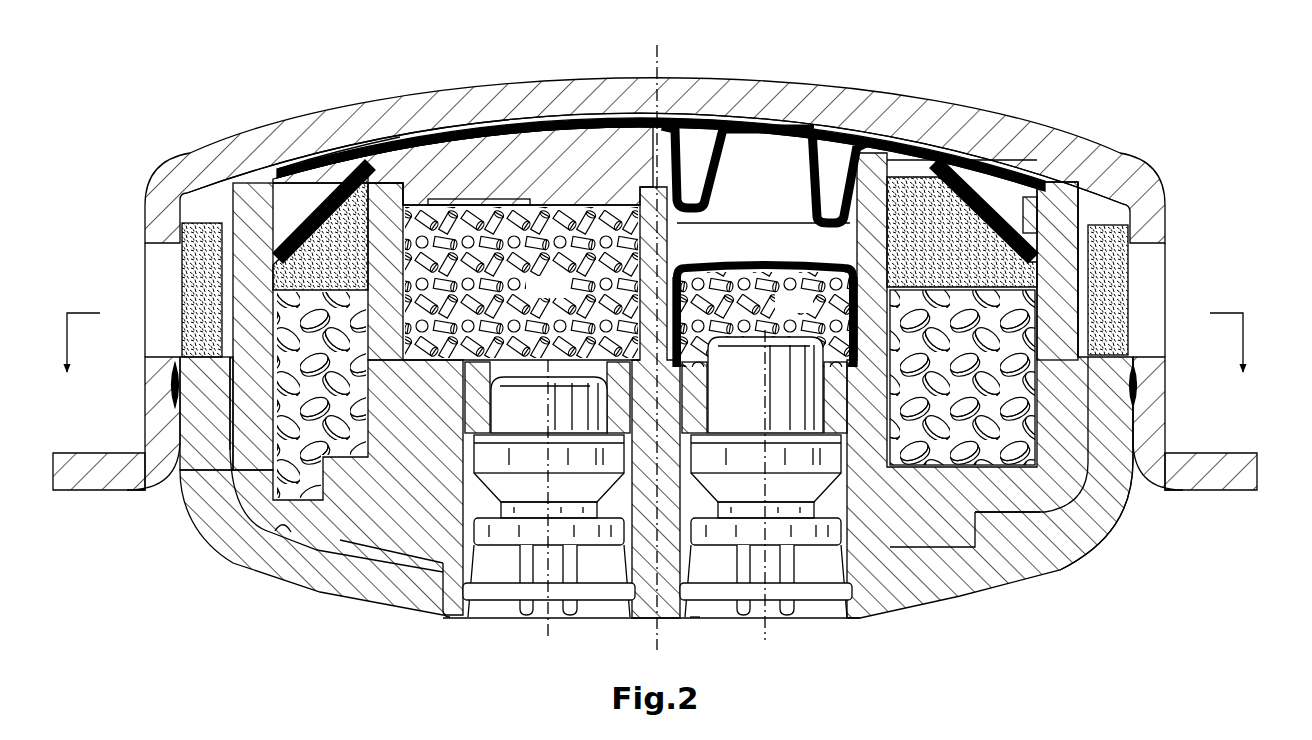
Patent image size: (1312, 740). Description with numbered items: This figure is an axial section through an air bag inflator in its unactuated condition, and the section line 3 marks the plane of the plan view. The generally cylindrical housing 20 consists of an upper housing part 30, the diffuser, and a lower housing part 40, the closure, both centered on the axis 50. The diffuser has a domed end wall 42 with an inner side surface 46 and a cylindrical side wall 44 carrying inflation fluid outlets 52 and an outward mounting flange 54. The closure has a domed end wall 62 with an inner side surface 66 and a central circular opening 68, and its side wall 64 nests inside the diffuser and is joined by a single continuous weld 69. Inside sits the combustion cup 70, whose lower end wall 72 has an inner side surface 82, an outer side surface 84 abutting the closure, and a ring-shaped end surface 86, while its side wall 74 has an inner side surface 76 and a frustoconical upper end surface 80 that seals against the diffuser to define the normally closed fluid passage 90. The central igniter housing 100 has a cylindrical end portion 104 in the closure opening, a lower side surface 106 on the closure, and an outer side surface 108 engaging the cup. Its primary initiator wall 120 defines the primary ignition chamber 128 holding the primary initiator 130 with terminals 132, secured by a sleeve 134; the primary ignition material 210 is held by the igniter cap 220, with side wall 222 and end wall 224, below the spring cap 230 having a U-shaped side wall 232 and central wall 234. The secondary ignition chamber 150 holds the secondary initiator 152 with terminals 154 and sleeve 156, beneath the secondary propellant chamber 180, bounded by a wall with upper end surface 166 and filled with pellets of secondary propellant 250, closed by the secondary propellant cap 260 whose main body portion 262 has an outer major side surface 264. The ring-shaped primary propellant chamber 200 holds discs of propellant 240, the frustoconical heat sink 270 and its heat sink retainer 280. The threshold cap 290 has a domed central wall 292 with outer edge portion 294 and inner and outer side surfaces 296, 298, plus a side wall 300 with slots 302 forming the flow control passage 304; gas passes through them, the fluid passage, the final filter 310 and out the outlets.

The housing 20 is at (654, 355).
The upper housing part 30 is at (655, 247).
The lower housing part 40 is at (658, 369).
The end wall 42 is at (520, 97).
The side wall 44 is at (163, 228).
The inner side surface 46 is at (560, 120).
The axis 50 is at (657, 47).
The inflation fluid outlets 52 is at (160, 292).
The inflator mounting flange 54 is at (78, 452).
The end wall 62 is at (280, 562).
The side wall 64 is at (195, 445).
The inner side surface 66 is at (270, 525).
The circular opening 68 is at (445, 603).
The weld 69 is at (170, 385).
The combustion cup 70 is at (1088, 490).
The lower end wall 72 is at (1022, 520).
The side wall 74 is at (1057, 280).
The inner side surface 76 is at (1040, 312).
The upper end surface 80 is at (1043, 227).
The inner side surface 82 is at (1077, 530).
The outer side surface 84 is at (1008, 528).
The end surface 86 is at (963, 545).
The fluid passage 90 is at (1162, 210).
The igniter housing 100 is at (901, 558).
The cylindrical end portion 104 is at (452, 612).
The lower side surface 106 is at (410, 563).
The outer side surface 108 is at (290, 530).
The primary initiator wall 120 is at (857, 613).
The primary ignition chamber 128 is at (778, 313).
The primary initiator 130 is at (773, 509).
The terminals 132 is at (741, 617).
The sleeve 134 is at (694, 390).
The secondary ignition chamber 150 is at (549, 536).
The secondary initiator 152 is at (586, 573).
The terminals 154 is at (527, 617).
The sleeve 156 is at (478, 413).
The upper end surface 166 is at (378, 200).
The secondary propellant chamber 180 is at (531, 297).
The primary propellant chamber 200 is at (1002, 370).
The primary ignition material 210 is at (725, 318).
The igniter cap 220 is at (762, 424).
The side wall 222 is at (837, 283).
The end wall 224 is at (702, 267).
The spring cap 230 is at (788, 115).
The side wall 232 is at (702, 124).
The central wall 234 is at (755, 124).
The propellant 240 is at (205, 435).
The secondary propellant 250 is at (462, 248).
The secondary propellant cap 260 is at (581, 133).
The main body portion 262 is at (473, 157).
The outer major side surface 264 is at (413, 200).
The combustor heat sink 270 is at (1085, 193).
The heat sink retainer 280 is at (333, 180).
The threshold cap 290 is at (777, 117).
The central wall 292 is at (810, 130).
The outer edge portion 294 is at (1020, 180).
The inner side surface 296 is at (860, 133).
The outer side surface 298 is at (847, 150).
The side wall 300 is at (298, 203).
The slots 302 is at (267, 197).
The fluid flow control passage 304 is at (1117, 237).
The final filter 310 is at (180, 265).
The section line 3- 3 is at (654, 348).